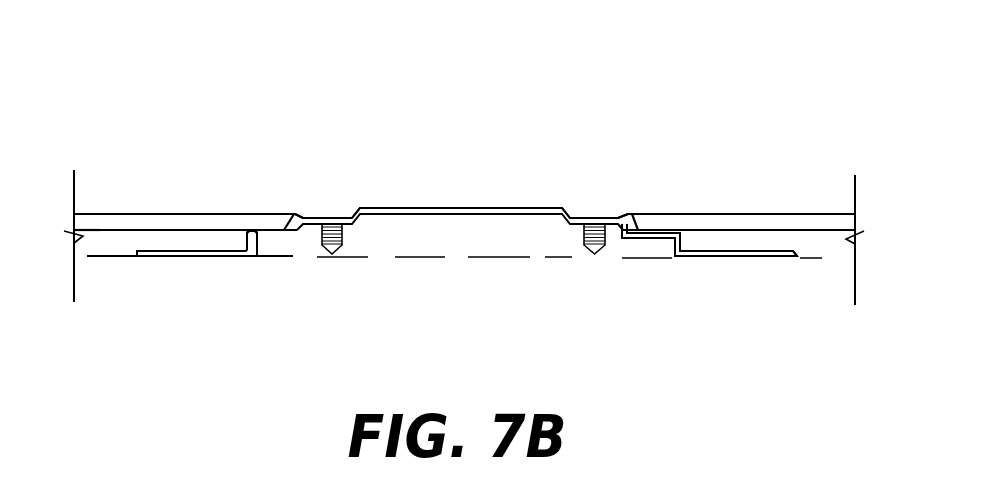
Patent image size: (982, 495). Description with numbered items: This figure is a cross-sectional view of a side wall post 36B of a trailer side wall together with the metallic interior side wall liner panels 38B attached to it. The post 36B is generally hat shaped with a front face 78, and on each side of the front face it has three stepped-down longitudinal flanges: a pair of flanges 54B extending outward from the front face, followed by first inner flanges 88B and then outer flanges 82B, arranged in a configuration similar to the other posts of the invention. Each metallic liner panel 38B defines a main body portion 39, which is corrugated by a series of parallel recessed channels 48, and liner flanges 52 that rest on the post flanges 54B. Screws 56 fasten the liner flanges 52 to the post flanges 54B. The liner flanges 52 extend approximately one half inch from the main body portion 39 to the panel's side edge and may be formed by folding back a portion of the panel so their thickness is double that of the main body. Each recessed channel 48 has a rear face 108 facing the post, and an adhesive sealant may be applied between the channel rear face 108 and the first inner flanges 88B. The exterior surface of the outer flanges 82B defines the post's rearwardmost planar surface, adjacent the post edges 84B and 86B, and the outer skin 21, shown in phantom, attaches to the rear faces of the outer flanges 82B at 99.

The outer skin 21 is at (398, 257).
The post 36B is at (457, 207).
The interior side wall liner panel 38B is at (138, 214).
The main body portion 39 is at (194, 214).
The recessed channel 48 is at (97, 231).
The liner panel flange 52 is at (300, 215).
The post flange 54B is at (323, 216).
The screw 56 is at (358, 212).
The front face 78 is at (542, 207).
The outer flange 82B is at (175, 257).
The post edge 84B is at (138, 257).
The post edge 86B is at (795, 258).
The first inner flange 88B is at (270, 242).
The attachment location 99 is at (203, 257).
The rear face of recessed channel 108 is at (261, 250).